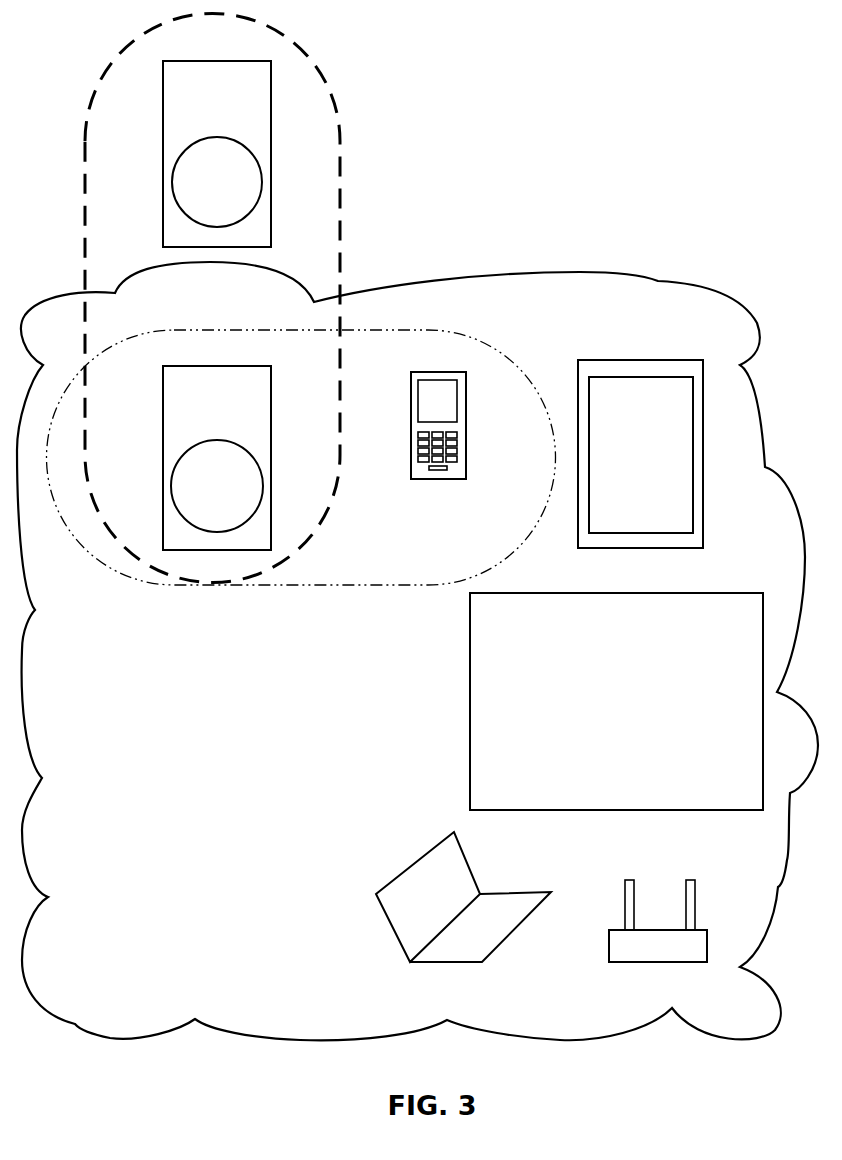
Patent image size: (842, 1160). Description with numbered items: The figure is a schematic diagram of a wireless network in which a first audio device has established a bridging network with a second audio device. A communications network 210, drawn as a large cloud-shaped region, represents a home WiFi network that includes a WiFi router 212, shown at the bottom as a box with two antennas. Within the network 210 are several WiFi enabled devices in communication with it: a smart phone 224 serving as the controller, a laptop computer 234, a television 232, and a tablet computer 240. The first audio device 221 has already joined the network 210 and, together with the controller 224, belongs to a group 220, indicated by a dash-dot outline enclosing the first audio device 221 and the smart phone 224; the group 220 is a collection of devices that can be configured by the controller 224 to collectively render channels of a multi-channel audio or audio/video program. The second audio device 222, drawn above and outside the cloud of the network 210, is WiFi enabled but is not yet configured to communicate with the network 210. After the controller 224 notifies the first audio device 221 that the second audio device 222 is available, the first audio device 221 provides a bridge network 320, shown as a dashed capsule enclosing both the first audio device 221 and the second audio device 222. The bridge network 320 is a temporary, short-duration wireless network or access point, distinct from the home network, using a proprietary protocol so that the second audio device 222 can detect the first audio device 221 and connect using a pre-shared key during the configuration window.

The communications network 210 is at (340, 1022).
The WiFi router 212 is at (658, 921).
The group 220 is at (302, 585).
The first audio device 221 is at (200, 393).
The second audio device 222 is at (200, 88).
The smart phone 224 is at (415, 470).
The television 232 is at (600, 711).
The laptop computer 234 is at (421, 902).
The tablet computer 240 is at (625, 464).
The bridge network 320 is at (340, 170).